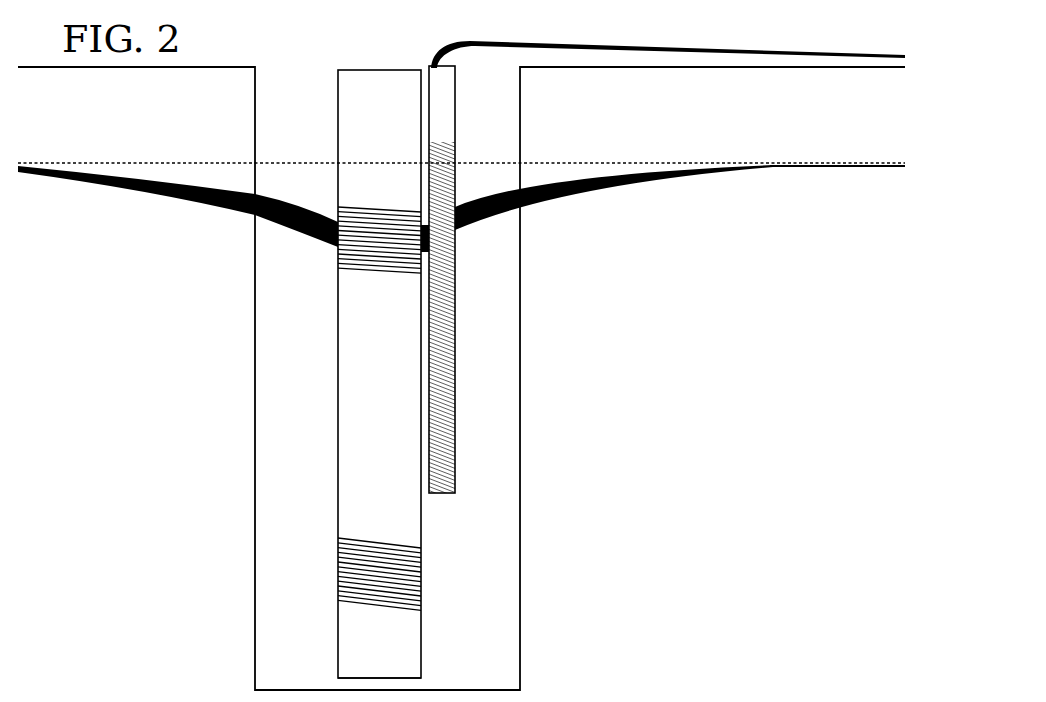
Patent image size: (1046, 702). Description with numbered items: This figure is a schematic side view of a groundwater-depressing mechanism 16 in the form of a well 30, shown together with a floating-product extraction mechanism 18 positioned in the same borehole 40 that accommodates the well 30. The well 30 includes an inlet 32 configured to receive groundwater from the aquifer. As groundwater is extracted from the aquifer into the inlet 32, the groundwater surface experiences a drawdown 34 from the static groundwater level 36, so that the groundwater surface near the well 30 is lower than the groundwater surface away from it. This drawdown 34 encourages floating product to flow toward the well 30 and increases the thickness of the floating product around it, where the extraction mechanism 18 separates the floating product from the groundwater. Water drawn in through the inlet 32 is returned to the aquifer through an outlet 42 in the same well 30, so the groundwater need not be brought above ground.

The groundwater-depressing mechanism 16 is at (333, 64).
The floating-product extraction mechanism 18 is at (462, 124).
The well 30 is at (418, 668).
The inlet 32 is at (330, 276).
The drawdown 34 is at (305, 228).
The static groundwater level 36 is at (228, 158).
The borehole 40 is at (250, 325).
The outlet 42 is at (330, 600).